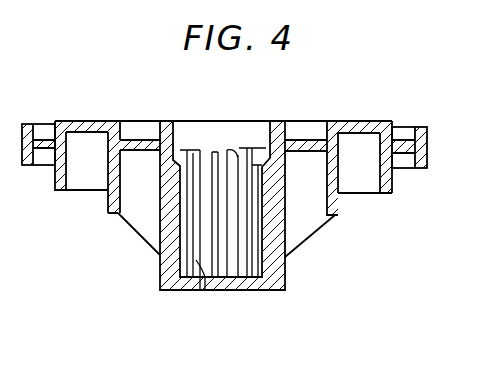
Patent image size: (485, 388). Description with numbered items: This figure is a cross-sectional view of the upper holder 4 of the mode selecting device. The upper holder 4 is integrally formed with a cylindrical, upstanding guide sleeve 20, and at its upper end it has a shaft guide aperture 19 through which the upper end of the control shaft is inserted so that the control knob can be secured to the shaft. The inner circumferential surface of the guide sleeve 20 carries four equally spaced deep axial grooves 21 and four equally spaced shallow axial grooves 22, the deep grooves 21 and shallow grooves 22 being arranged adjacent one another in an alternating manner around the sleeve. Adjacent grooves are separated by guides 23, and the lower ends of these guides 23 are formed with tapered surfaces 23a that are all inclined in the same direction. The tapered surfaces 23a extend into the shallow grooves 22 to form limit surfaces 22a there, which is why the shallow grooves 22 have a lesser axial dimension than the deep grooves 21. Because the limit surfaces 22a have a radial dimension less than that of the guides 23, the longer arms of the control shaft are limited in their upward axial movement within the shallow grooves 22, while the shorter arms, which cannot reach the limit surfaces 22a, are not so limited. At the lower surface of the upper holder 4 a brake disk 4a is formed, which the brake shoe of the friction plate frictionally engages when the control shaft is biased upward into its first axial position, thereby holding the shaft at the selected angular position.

The upper holder 4 is at (270, 256).
The brake disk 4a is at (90, 121).
The shaft guide aperture 19 is at (226, 292).
The guide sleeve 20 is at (285, 222).
The deep axial grooves 21 is at (229, 162).
The shallow axial grooves 22 is at (258, 163).
The limit surfaces 22a is at (238, 190).
The guides 23 is at (198, 292).
The tapered surfaces 23a is at (230, 162).